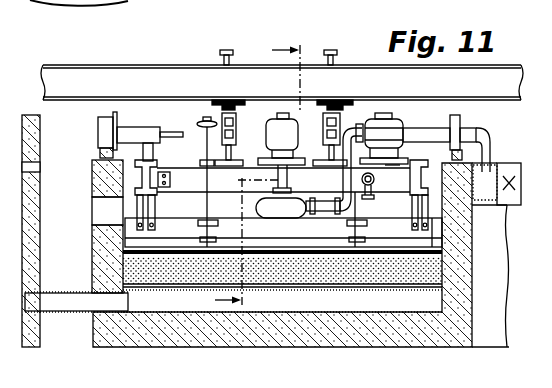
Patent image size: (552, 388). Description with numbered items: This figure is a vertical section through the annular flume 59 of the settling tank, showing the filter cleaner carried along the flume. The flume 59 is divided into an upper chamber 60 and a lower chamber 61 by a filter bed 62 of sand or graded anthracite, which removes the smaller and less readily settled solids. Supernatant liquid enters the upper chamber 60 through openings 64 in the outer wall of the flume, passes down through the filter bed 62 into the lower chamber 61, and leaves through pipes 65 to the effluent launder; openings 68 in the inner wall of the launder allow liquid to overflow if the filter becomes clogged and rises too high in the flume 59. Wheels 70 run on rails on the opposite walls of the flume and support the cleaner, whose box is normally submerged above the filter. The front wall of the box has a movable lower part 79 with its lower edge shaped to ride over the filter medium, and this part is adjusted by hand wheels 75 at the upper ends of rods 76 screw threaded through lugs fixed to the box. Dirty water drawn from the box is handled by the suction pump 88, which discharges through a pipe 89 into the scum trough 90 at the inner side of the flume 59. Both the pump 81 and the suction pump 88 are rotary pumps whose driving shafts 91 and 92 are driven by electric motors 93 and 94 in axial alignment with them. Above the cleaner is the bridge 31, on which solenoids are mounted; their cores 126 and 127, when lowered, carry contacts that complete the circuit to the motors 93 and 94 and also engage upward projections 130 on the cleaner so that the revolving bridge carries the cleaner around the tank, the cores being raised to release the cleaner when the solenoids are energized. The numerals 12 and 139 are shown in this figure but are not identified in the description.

The bridge 31 is at (108, 77).
The core 127 is at (226, 49).
The core 126 is at (330, 49).
The section line 12 is at (243, 176).
The wheels 70 is at (100, 130).
The elbow pipe 139 is at (343, 118).
The electric motor 93 is at (390, 122).
The pipe 89 is at (468, 130).
The scum trough 90 is at (498, 170).
The annular flume 59 is at (484, 243).
The hand wheels 75 is at (203, 124).
The upward projections 130 is at (239, 133).
The electric motor 94 is at (281, 153).
The openings 68 is at (38, 171).
The upper chamber 60 is at (137, 179).
The openings 64 is at (100, 207).
The movable lower part 79 is at (133, 241).
The pipes 65 is at (67, 292).
The rods 76 is at (204, 206).
The driving shaft 92 is at (245, 182).
The driving shaft 91 is at (385, 168).
The pump 81 is at (386, 182).
The suction pump 88 is at (295, 207).
The filter bed 62 is at (354, 280).
The lower chamber 61 is at (172, 302).